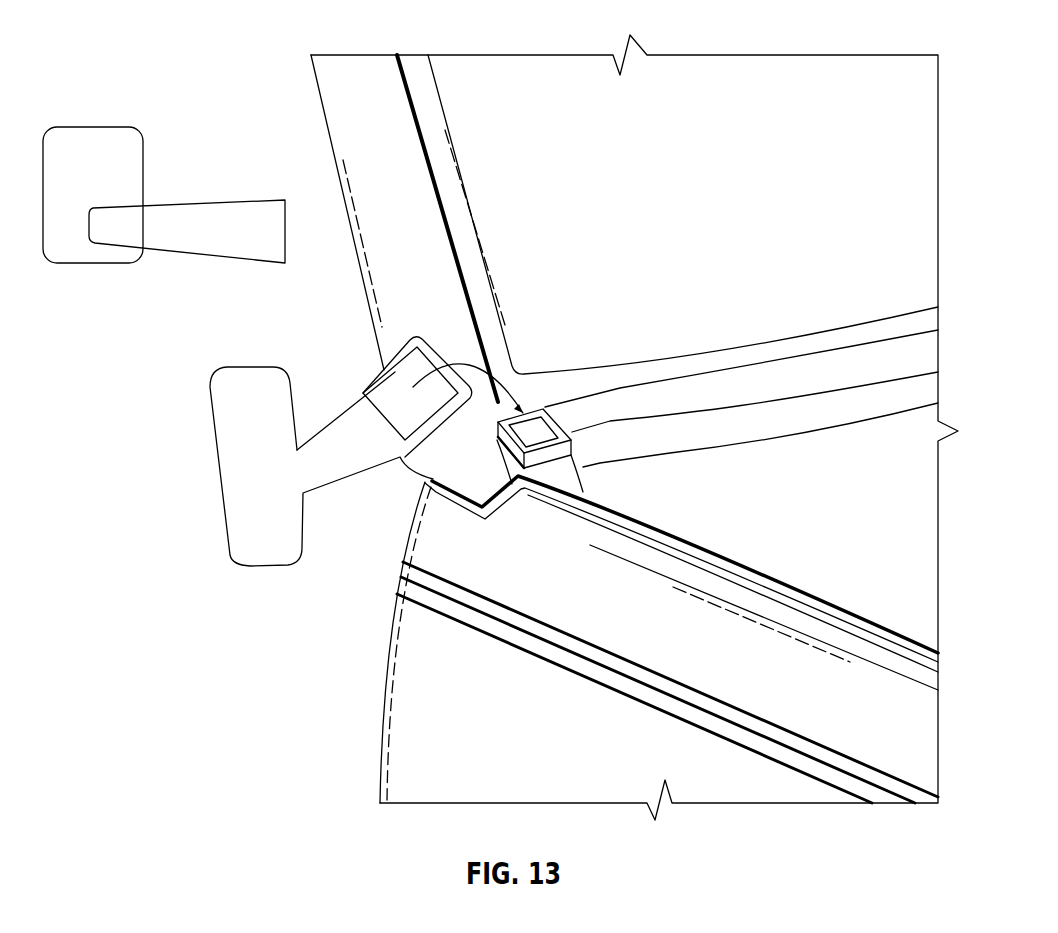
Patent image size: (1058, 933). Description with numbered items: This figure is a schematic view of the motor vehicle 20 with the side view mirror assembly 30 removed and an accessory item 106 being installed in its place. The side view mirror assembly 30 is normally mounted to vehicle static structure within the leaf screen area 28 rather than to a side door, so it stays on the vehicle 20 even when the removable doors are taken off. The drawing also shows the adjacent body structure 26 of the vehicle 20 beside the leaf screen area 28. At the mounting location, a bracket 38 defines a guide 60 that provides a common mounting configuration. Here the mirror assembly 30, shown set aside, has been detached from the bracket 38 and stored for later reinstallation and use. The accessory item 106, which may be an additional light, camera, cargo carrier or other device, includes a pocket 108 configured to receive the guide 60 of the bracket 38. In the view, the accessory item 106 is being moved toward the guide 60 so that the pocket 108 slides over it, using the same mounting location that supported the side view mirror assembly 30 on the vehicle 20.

The motor vehicle 20 is at (883, 36).
The A-pillar 26 is at (347, 138).
The leaf screen area 28 is at (797, 372).
The side view mirror assembly 30 is at (203, 125).
The bracket 38 is at (573, 452).
The guide 60 is at (535, 462).
The accessory item 106 is at (227, 495).
The pocket 108 is at (385, 389).